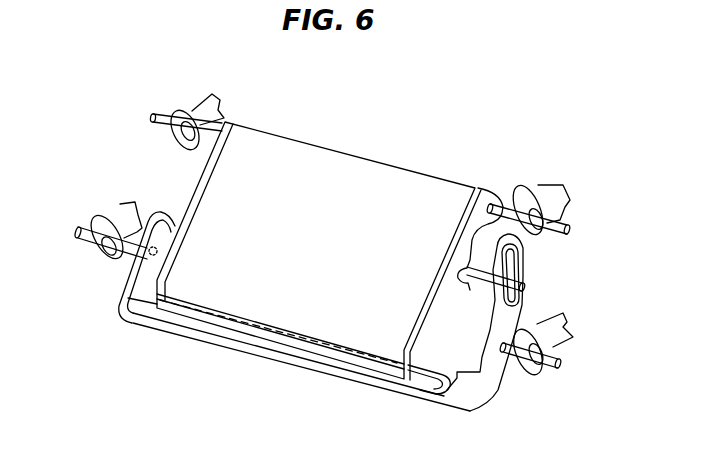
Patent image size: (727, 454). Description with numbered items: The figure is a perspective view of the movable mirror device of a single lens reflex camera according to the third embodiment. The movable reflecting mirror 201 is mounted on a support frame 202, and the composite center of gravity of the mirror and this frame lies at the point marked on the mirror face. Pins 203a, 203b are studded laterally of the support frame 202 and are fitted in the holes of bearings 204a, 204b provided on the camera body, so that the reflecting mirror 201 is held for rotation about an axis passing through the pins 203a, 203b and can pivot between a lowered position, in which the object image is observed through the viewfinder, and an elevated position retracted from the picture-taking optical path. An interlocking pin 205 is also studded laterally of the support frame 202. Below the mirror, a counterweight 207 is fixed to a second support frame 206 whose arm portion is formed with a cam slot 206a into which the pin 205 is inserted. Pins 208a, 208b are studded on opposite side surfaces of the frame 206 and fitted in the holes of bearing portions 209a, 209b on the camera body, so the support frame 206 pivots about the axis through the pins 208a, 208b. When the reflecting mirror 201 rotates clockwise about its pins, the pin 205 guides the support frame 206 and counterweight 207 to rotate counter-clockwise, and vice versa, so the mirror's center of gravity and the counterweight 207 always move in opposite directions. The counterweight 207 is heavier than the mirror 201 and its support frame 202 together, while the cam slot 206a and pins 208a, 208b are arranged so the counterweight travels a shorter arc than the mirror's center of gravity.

The movable reflecting mirror 201 is at (384, 172).
The support frame 202 is at (482, 200).
The pin 203a is at (508, 206).
The pin 203b is at (222, 114).
The bearing 204a is at (560, 210).
The bearing 204b is at (203, 100).
The interlocking pin 205 is at (521, 277).
The support frame 206 is at (467, 398).
The cam slot 206a is at (523, 306).
The counterweight 207 is at (433, 378).
The pin 208a is at (547, 360).
The pin 208b is at (130, 250).
The bearing portion 209a is at (563, 337).
The bearing portion 209b is at (124, 203).